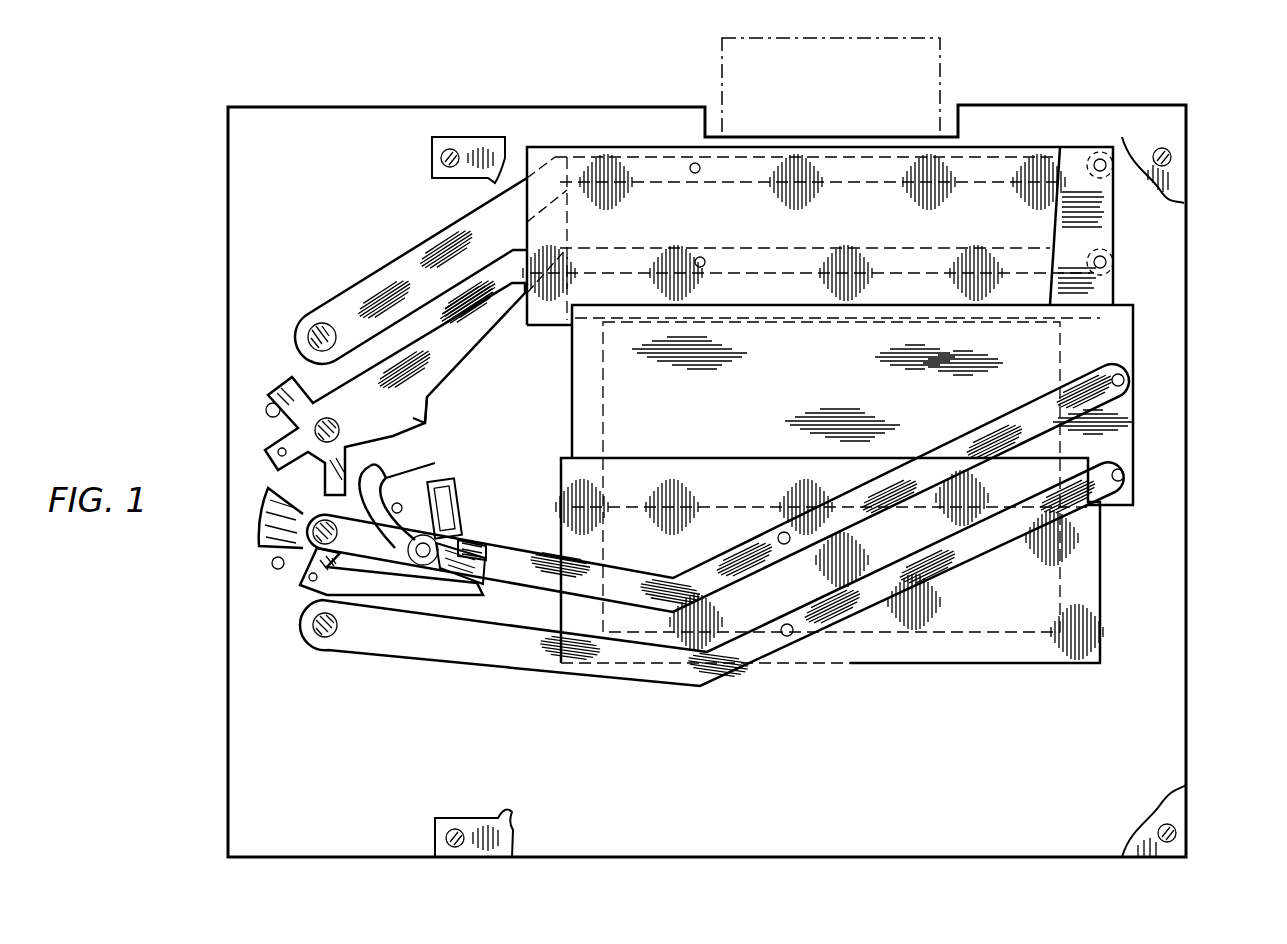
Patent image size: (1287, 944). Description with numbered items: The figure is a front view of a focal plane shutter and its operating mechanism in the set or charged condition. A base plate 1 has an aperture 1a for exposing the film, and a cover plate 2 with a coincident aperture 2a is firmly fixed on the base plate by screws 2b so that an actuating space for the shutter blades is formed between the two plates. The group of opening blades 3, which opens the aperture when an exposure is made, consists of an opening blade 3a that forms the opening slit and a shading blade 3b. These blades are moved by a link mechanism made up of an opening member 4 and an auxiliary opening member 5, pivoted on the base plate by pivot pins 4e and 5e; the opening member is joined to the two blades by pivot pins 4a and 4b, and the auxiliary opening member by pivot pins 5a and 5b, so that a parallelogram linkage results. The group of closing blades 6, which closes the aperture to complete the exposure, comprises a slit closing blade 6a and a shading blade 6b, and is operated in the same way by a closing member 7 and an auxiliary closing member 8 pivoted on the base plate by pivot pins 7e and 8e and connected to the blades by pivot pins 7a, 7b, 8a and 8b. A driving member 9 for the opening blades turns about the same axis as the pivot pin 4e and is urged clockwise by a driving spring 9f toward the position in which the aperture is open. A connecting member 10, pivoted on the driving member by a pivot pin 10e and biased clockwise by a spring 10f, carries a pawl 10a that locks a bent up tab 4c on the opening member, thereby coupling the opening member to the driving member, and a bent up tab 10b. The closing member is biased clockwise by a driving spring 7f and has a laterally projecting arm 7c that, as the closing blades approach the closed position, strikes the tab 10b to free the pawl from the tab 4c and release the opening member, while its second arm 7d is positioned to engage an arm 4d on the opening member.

The base plate 1 is at (1173, 648).
The aperture 1a is at (833, 477).
The cover plate 2 is at (1167, 800).
The aperture 2a is at (1000, 630).
The screws 2b is at (432, 160).
The opening blades 3 is at (916, 484).
The opening blade 3a is at (1125, 423).
The shading blade 3b is at (1080, 465).
The opening member 4 is at (678, 471).
The pivot pin 4a is at (1127, 373).
The pivot pin 4b is at (780, 536).
The bent up tab 4c is at (453, 485).
The arm 4d is at (267, 515).
The pivot pin 4e is at (338, 532).
The auxiliary opening member 5 is at (721, 574).
The pivot pin 5a is at (1125, 478).
The pivot pin 5b is at (787, 624).
The pivot pin 5e is at (320, 637).
The closing blades 6 is at (899, 236).
The slit closing blade 6a is at (1105, 202).
The shading blade 6b is at (1057, 227).
The closing member 7 is at (621, 321).
The pivot pin 7a is at (1108, 260).
The pivot pin 7b is at (698, 255).
The arm 7c is at (430, 405).
The second arm 7d is at (327, 476).
The pivot pin 7e is at (332, 424).
The driving spring 7f is at (283, 398).
The auxiliary closing member 8 is at (673, 234).
The pivot pin 8a is at (1100, 159).
The pivot pin 8b is at (695, 173).
The pivot pin 8e is at (318, 330).
The driving member 9 is at (361, 595).
The driving spring 9f is at (257, 550).
The connecting member 10 is at (460, 530).
The pawl 10a is at (437, 463).
The bent up tab 10b is at (433, 450).
The pivot pin 10e is at (423, 560).
The spring 10f is at (483, 583).